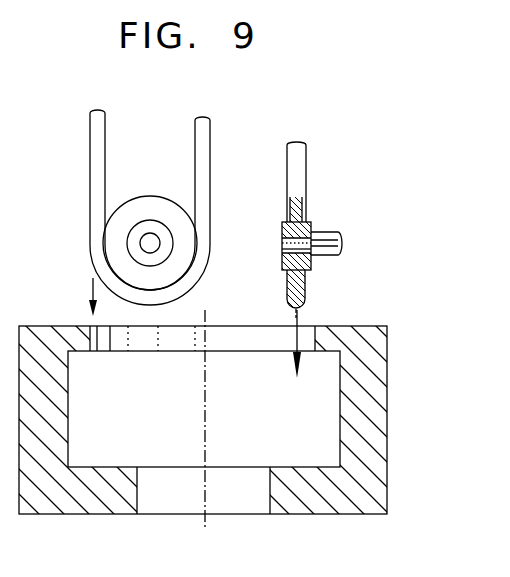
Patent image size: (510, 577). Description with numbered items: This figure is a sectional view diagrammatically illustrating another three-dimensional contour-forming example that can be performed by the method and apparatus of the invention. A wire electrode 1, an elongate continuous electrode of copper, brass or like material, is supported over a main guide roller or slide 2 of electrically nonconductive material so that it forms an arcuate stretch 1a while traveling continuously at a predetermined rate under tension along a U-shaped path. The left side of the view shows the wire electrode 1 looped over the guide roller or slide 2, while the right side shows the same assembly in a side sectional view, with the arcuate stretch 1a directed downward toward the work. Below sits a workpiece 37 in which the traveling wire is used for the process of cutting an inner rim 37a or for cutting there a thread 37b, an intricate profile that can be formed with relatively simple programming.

The wire electrode 1 is at (207, 157).
The arcuate stretch 1a is at (287, 305).
The main guide roller or slide 2 is at (144, 199).
The workpiece 37 is at (384, 351).
The inner rim 37a is at (301, 333).
The thread 37b is at (93, 352).